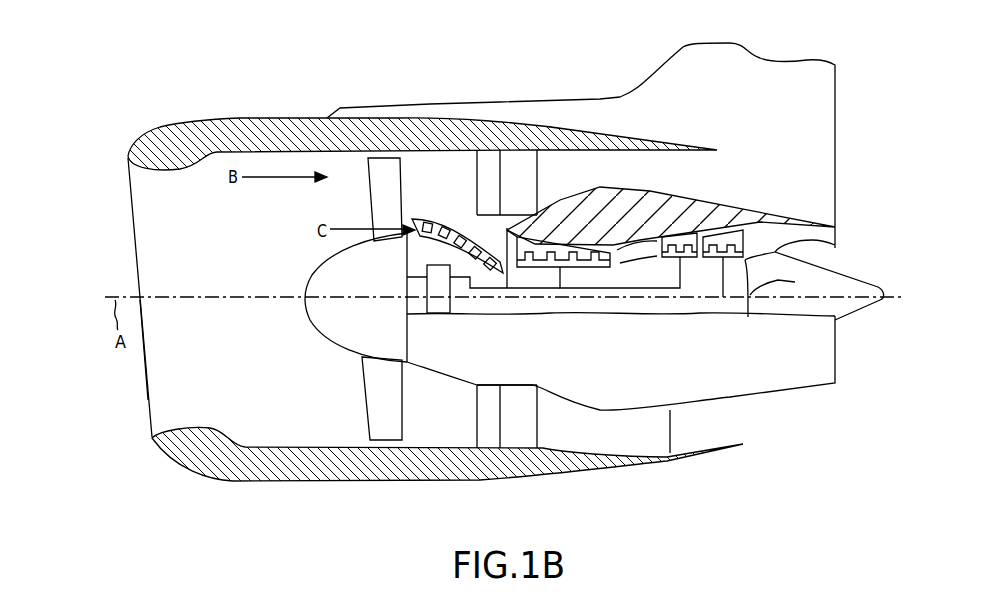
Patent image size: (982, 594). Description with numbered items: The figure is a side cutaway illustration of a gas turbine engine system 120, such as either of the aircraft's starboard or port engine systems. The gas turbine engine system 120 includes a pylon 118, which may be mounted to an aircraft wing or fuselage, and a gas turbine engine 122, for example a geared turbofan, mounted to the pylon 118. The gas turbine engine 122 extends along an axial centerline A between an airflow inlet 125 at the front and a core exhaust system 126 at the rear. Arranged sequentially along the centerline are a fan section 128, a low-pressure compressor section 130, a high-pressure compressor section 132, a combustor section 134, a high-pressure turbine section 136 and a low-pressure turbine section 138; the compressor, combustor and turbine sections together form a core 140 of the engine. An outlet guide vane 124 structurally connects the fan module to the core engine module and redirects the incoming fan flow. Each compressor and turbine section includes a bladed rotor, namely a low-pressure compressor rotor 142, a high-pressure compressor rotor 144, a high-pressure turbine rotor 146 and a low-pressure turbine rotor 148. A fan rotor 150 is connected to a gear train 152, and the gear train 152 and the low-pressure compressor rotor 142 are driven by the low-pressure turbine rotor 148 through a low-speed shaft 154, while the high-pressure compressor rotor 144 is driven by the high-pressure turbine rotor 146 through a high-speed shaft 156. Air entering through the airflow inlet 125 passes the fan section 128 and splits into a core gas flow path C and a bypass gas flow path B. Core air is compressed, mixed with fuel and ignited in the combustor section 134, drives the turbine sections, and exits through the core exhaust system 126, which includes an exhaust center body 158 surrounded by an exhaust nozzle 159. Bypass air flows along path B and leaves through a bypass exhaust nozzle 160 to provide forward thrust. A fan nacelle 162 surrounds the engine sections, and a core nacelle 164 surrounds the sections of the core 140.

The pylon 118 is at (750, 72).
The gas turbine engine system 120 is at (106, 88).
The gas turbine engine 122 is at (215, 115).
The outlet guide vane 124 is at (537, 167).
The airflow inlet 125 is at (147, 380).
The core exhaust system 126 is at (855, 257).
The fan section 128 is at (390, 484).
The low-pressure compressor section 130 is at (507, 324).
The high-pressure compressor section 132 is at (592, 324).
The combustor section 134 is at (643, 324).
The high-pressure turbine section 136 is at (695, 324).
The low-pressure turbine section 138 is at (745, 324).
The core 140 is at (745, 362).
The low-pressure compressor rotor 142 is at (455, 228).
The high-pressure compressor rotor 144 is at (532, 245).
The high-pressure turbine rotor 146 is at (670, 237).
The low-pressure turbine rotor 148 is at (716, 237).
The fan rotor 150 is at (360, 350).
The gear train 152 is at (427, 270).
The low-speed shaft 154 is at (795, 282).
The high-speed shaft 156 is at (560, 288).
The exhaust center body 158 is at (867, 283).
The exhaust nozzle 159 is at (845, 218).
The bypass exhaust nozzle 160 is at (740, 164).
The fan nacelle 162 is at (253, 118).
The core nacelle 164 is at (600, 190).